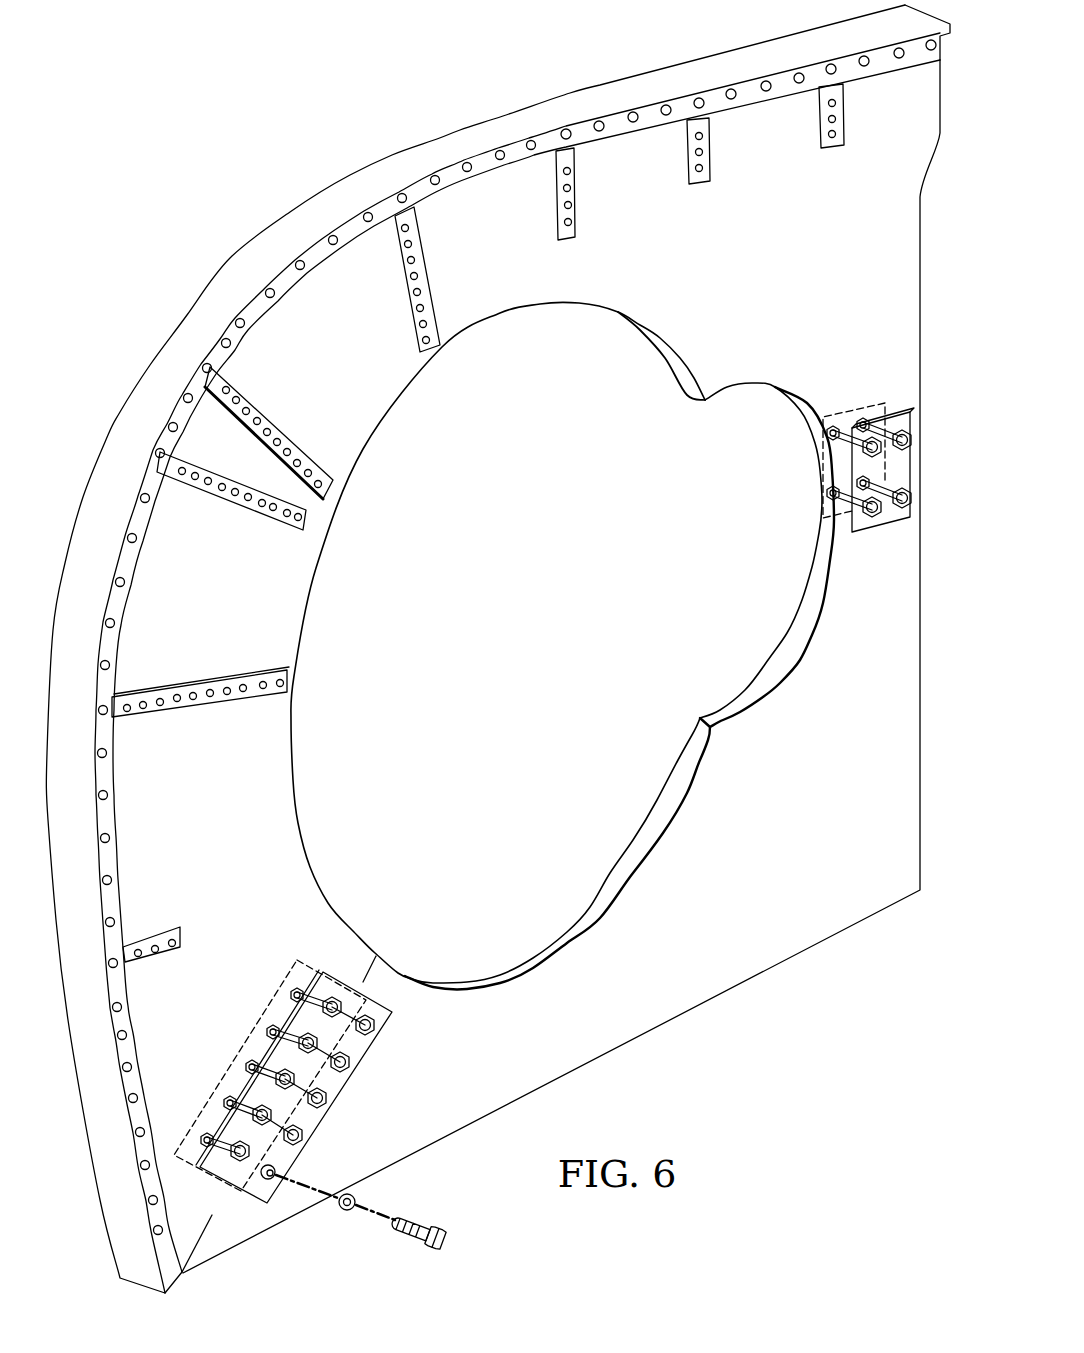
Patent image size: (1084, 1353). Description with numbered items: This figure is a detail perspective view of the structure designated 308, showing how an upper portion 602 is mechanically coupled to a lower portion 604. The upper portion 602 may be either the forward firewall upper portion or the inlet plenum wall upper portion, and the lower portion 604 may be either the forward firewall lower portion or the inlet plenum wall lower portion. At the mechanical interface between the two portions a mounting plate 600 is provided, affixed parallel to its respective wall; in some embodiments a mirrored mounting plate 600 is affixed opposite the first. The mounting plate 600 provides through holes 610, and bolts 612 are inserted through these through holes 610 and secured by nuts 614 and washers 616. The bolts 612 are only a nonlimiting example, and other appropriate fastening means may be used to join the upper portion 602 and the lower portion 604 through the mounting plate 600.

The fixture assembly 308 is at (306, 69).
The upper portion 602 is at (270, 230).
The lower portion 604 is at (661, 1024).
The mounting plate 600 is at (883, 531).
The nuts 614 is at (258, 1050).
The through holes 610 is at (278, 1168).
The bolts 612 is at (409, 1242).
The washers 616 is at (347, 1211).